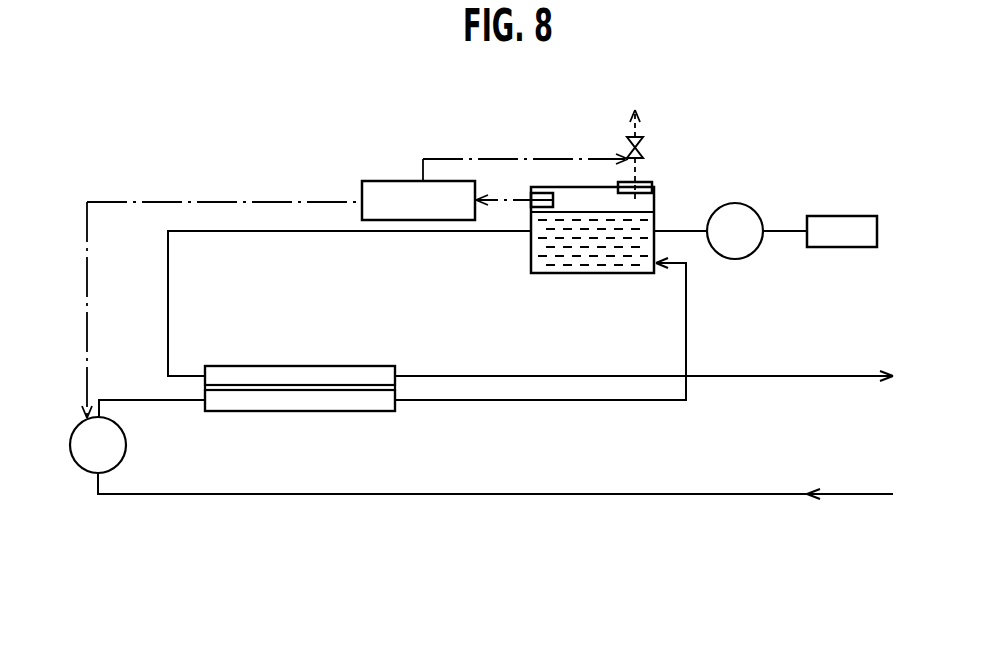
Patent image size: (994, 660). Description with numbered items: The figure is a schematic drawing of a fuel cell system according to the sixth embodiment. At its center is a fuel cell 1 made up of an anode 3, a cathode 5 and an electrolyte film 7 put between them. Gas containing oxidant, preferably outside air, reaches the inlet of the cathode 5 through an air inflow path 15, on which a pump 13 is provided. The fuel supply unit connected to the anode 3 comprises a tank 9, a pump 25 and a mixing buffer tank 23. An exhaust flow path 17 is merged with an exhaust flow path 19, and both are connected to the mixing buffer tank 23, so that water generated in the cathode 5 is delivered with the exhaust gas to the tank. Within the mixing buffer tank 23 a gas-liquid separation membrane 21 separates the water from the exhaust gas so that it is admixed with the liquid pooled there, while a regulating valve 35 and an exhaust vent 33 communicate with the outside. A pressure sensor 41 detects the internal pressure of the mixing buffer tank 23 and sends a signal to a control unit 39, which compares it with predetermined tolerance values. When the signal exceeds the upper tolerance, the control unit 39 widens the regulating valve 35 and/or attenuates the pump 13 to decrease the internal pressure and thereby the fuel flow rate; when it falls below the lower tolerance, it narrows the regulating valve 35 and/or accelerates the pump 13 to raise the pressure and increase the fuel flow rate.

The fuel cell 1 is at (395, 360).
The anode 3 is at (293, 366).
The cathode 5 is at (258, 411).
The electrolyte film 7 is at (343, 392).
The tank 9 is at (845, 216).
The pump 13 is at (126, 447).
The air inflow path 15 is at (880, 495).
The exhaust flow path 17 is at (868, 374).
The exhaust flow path 19 is at (688, 305).
The gas-liquid separation membrane 21 is at (650, 182).
The mixing buffer tank 23 is at (570, 274).
The pump 25 is at (742, 203).
The exhaust vent 33 is at (626, 180).
The regulating valve 35 is at (628, 141).
The control unit 39 is at (400, 181).
The pressure sensor 41 is at (528, 197).